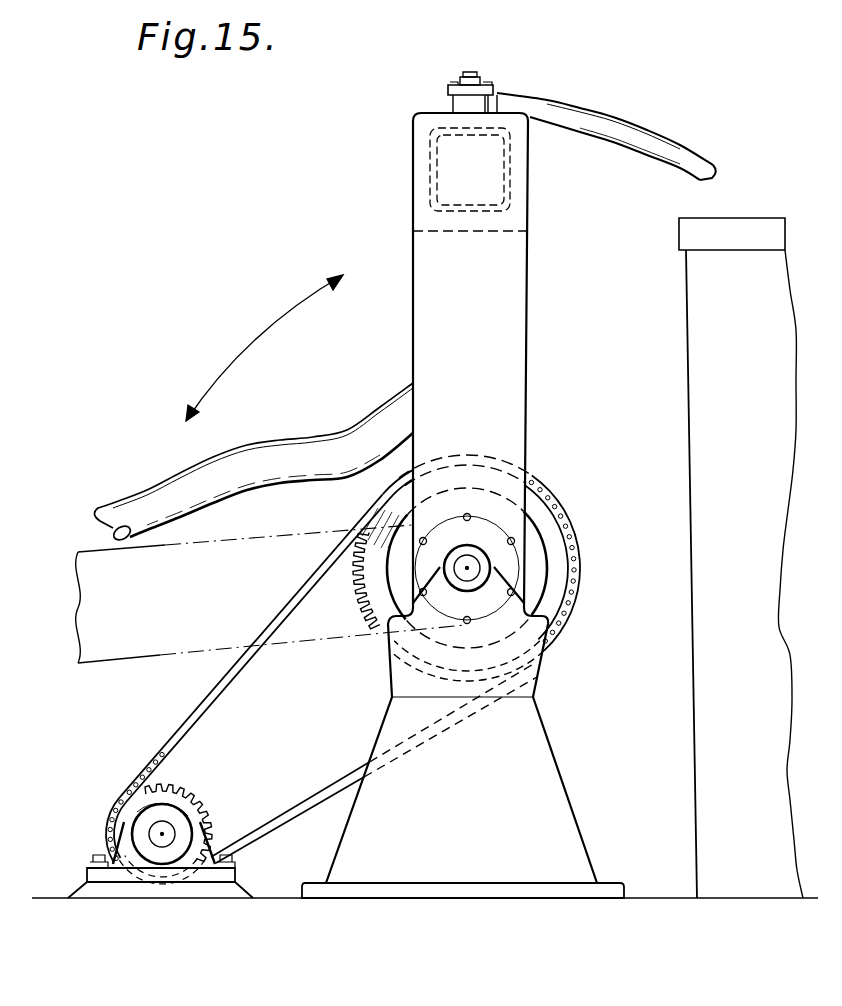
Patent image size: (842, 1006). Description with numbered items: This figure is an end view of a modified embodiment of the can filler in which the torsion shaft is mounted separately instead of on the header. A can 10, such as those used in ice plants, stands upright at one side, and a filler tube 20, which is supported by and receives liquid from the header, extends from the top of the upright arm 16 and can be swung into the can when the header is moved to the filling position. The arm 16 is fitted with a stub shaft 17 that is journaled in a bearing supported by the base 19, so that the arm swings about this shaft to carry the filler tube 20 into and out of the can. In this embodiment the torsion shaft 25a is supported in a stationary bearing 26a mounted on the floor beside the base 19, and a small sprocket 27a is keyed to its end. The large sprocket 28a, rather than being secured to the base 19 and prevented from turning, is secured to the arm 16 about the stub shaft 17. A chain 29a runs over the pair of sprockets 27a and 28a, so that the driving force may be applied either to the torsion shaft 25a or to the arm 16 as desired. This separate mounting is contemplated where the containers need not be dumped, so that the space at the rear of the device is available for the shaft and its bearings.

The can 10 is at (748, 375).
The arm 16 is at (528, 337).
The stub shaft 17 is at (472, 566).
The base 19 is at (535, 765).
The filler tube 20 is at (614, 114).
The torsion shaft 25a is at (162, 834).
The stationary bearing 26a is at (112, 857).
The small sprocket 27a is at (187, 796).
The large sprocket 28a is at (372, 627).
The chain 29a is at (225, 695).